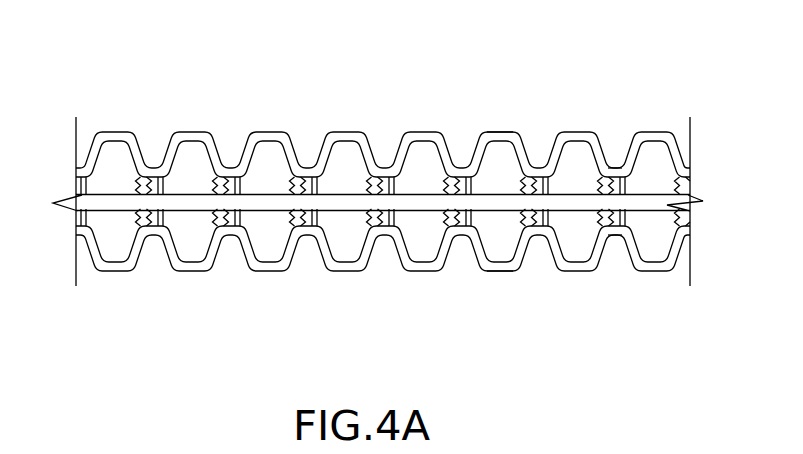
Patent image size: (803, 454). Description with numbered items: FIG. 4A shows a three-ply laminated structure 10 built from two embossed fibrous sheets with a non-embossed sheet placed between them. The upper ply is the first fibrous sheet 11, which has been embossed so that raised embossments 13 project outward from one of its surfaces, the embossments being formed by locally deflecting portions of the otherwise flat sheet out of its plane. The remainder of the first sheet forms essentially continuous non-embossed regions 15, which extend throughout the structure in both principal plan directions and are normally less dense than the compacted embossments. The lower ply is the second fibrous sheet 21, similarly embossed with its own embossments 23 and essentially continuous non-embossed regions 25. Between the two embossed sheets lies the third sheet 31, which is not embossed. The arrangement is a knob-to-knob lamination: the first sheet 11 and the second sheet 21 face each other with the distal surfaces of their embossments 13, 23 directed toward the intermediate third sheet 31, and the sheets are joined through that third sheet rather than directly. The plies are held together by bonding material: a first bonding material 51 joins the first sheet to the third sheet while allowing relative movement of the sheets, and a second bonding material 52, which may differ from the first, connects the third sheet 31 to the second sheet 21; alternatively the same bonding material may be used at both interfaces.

The structure 10 is at (94, 79).
The first fibrous sheet 11 is at (377, 101).
The embossments 13 is at (620, 168).
The non-embossed regions 15 is at (502, 132).
The second fibrous sheet 21 is at (383, 315).
The embossments 23 is at (612, 240).
The non-embossed regions 25 is at (497, 272).
The third sheet 31 is at (281, 205).
The first bonding material 51 is at (203, 179).
The second bonding material 52 is at (202, 227).